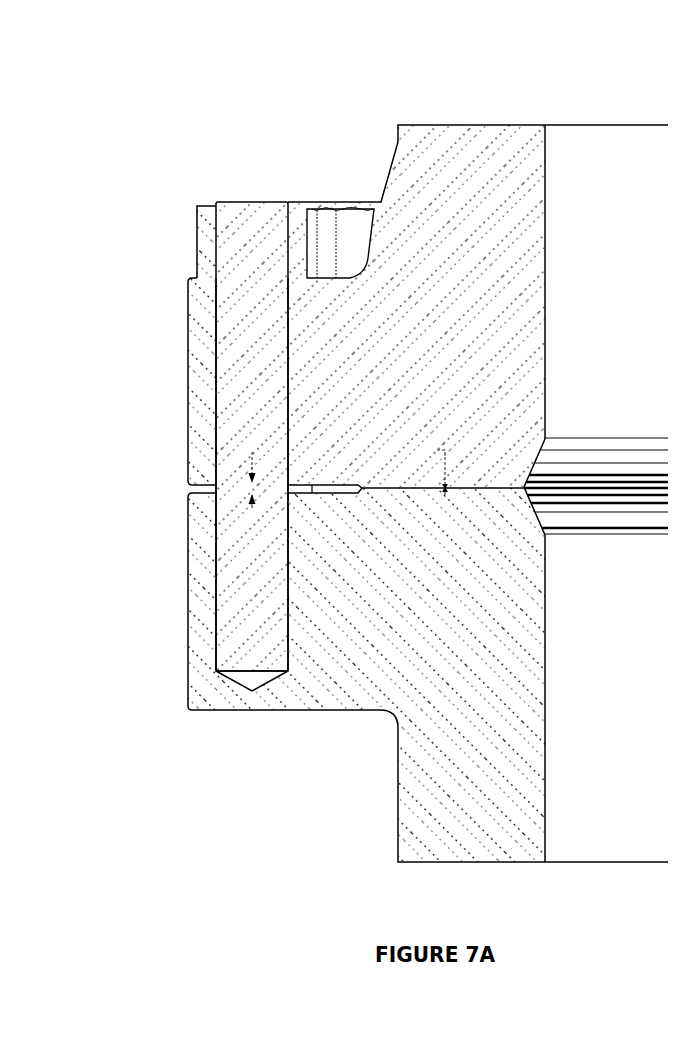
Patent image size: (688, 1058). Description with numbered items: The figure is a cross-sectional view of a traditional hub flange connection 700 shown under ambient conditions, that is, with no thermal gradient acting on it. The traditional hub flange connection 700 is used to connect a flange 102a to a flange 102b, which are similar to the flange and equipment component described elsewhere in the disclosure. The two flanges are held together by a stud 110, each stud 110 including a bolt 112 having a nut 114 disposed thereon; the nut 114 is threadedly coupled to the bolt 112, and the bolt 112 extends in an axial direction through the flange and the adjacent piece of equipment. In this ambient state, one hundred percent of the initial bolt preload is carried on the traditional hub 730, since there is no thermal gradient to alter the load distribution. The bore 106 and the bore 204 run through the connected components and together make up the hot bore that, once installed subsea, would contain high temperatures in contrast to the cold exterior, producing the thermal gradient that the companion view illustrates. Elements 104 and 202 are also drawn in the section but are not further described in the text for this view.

The traditional hub flange connection 700 is at (173, 77).
The first flange 104 is at (435, 160).
The bore 106 is at (548, 150).
The stud 110 is at (206, 399).
The bolt 112 is at (237, 345).
The nut 114 is at (207, 256).
The flange 102a is at (207, 382).
The flange 102b is at (202, 567).
The second flange 202 is at (450, 785).
The bore 204 is at (546, 815).
The traditional hub 730 is at (457, 488).